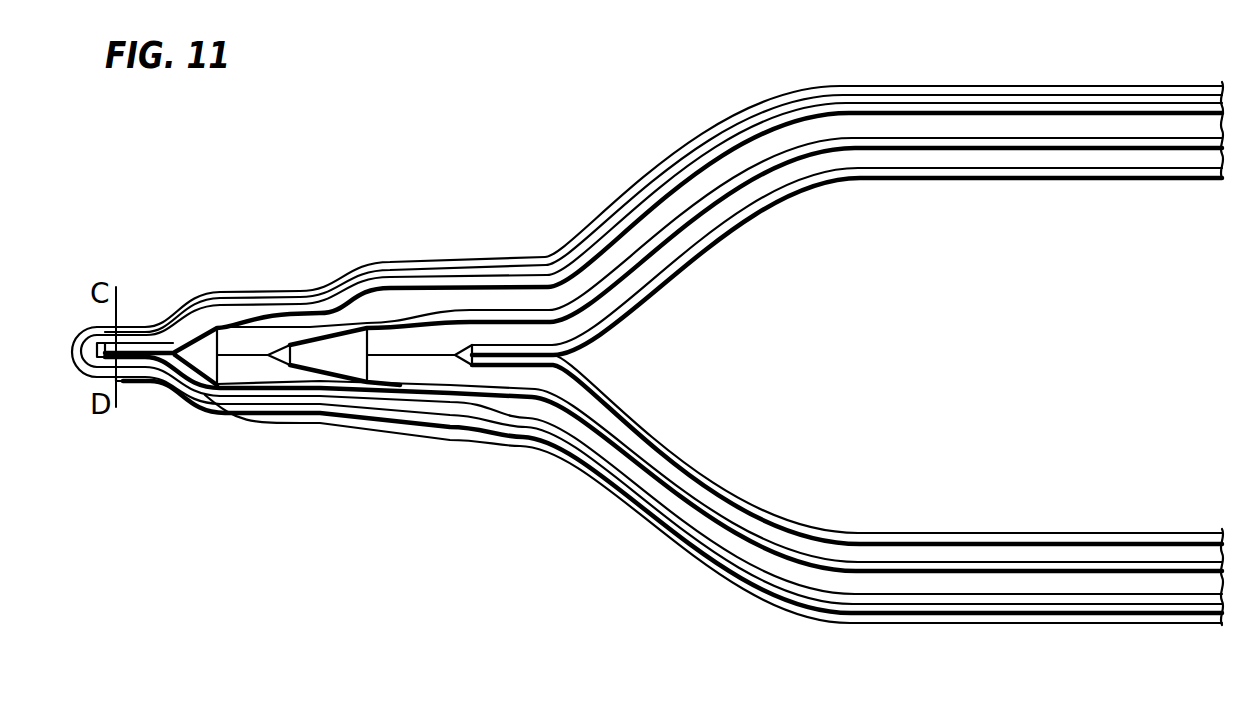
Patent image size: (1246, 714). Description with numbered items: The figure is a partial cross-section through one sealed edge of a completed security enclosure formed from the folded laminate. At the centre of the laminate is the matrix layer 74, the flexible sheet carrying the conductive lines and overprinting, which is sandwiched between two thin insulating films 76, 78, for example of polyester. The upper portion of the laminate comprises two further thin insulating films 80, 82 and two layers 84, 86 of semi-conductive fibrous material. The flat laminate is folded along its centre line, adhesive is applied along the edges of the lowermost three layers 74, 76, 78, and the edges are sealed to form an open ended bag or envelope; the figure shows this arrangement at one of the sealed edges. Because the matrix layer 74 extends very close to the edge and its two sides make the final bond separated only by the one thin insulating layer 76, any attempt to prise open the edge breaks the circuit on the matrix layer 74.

The matrix layer 74 is at (145, 338).
The thin insulating film 76 is at (980, 103).
The thin insulating film 78 is at (940, 86).
The thin insulating film 80 is at (1002, 170).
The thin insulating film 82 is at (937, 145).
The layer of semi-conductive fibrous material 84 is at (390, 367).
The layer of semi-conductive fibrous material 86 is at (243, 372).